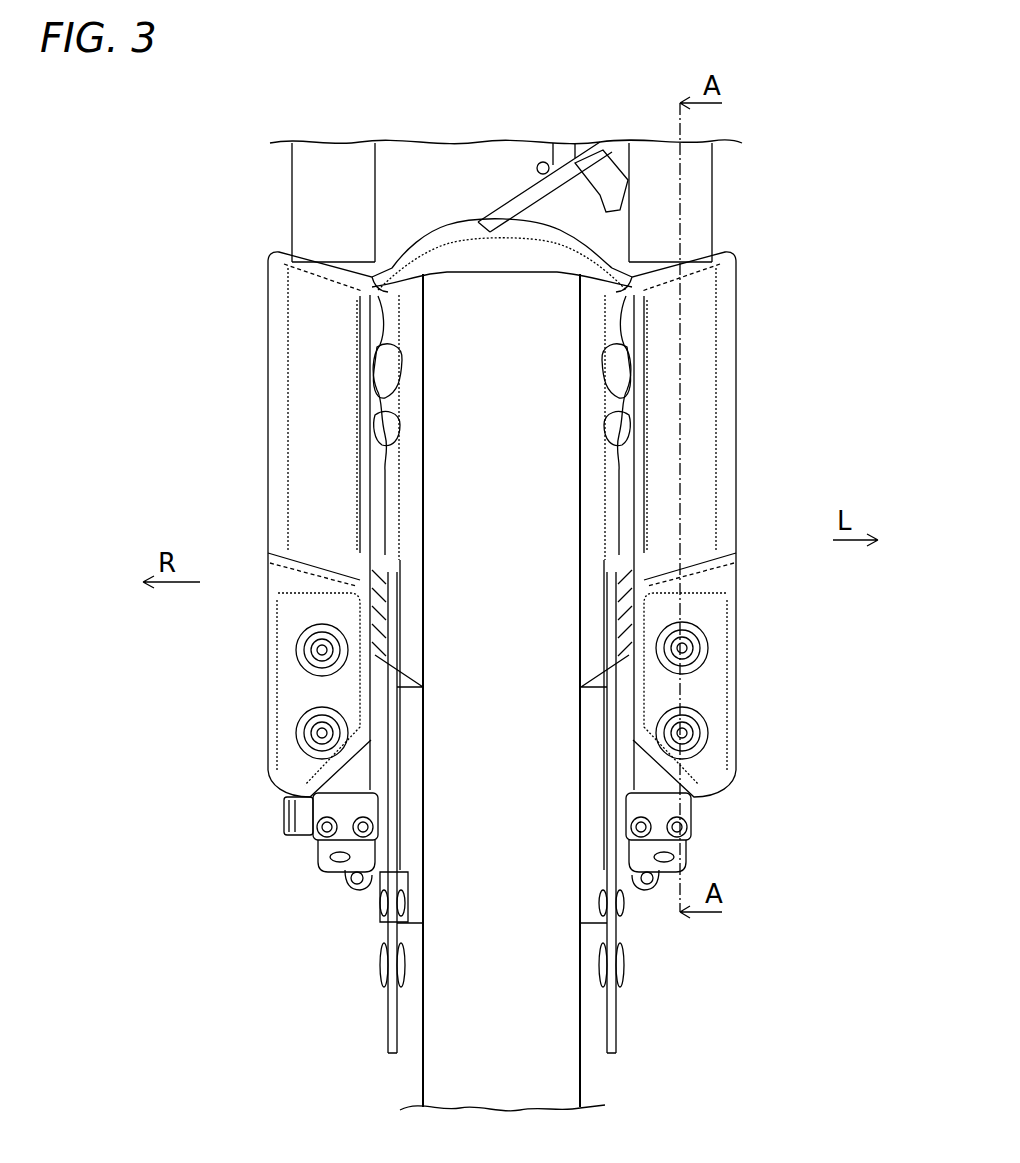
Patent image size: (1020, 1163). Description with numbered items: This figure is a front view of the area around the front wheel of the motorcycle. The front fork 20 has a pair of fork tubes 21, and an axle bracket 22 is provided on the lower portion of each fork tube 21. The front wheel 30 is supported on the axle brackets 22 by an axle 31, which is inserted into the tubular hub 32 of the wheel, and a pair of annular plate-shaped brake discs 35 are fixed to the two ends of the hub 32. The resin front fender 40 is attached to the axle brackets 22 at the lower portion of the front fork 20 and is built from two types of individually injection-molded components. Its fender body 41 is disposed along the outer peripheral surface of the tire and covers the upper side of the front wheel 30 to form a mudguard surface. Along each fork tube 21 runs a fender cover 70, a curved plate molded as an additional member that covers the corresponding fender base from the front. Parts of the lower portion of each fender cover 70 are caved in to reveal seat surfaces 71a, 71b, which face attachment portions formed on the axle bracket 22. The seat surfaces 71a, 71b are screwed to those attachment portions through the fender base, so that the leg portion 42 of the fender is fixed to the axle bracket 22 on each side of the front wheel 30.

The front fork 20 is at (727, 134).
The fork tube 21 is at (310, 185).
The axle bracket 22 is at (315, 853).
The front wheel 30 is at (600, 1088).
The axle 31 is at (282, 806).
The hub 32 is at (368, 885).
The brake disc 35 is at (388, 1008).
The front fender 40 is at (450, 218).
The fender body 41 is at (478, 232).
The leg portion 42 is at (265, 531).
The fender cover 70 is at (310, 415).
The seat surface 71a is at (296, 648).
The seat surface 71b is at (295, 737).